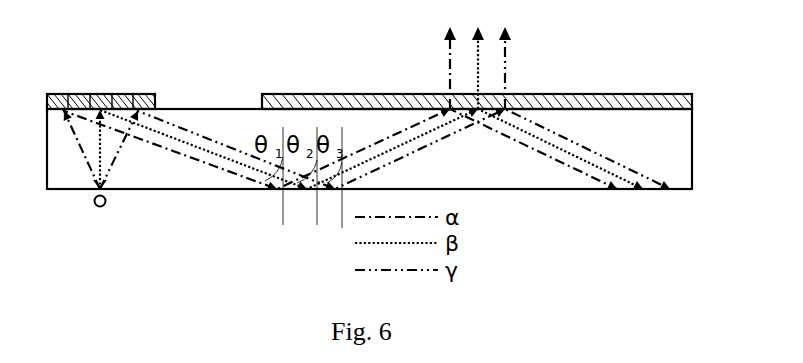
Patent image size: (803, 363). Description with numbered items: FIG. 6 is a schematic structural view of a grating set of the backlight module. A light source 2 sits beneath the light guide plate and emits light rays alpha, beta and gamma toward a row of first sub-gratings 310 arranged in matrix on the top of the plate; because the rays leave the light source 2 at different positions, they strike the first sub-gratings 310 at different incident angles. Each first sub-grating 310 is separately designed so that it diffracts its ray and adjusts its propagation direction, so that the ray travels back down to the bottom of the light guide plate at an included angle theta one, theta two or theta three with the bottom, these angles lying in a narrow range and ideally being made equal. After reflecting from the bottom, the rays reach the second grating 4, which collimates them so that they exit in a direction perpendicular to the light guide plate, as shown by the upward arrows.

The first sub-grating 310 is at (62, 93).
The second grating 4 is at (323, 93).
The light source 2 is at (103, 209).